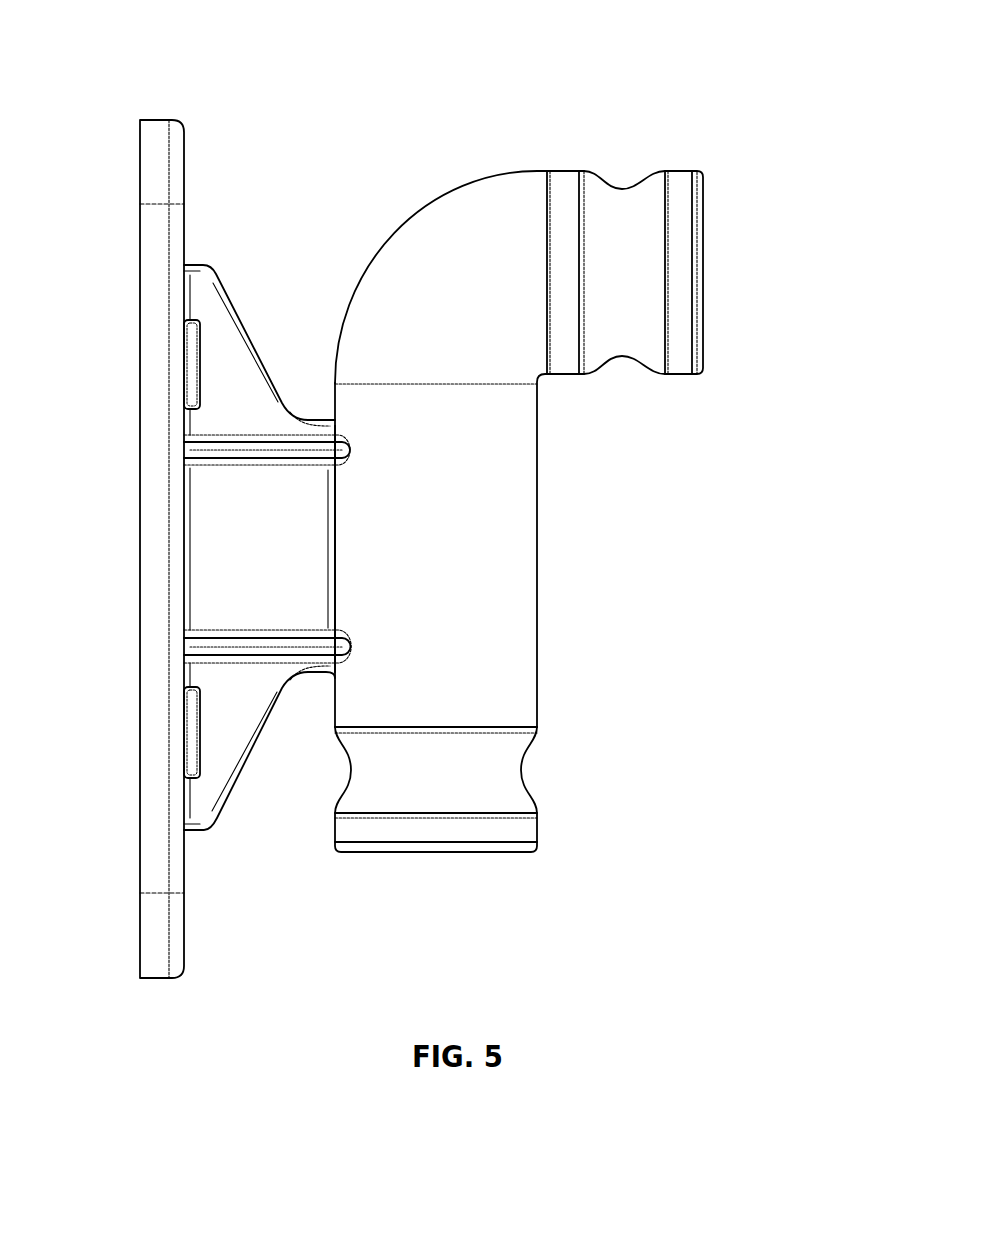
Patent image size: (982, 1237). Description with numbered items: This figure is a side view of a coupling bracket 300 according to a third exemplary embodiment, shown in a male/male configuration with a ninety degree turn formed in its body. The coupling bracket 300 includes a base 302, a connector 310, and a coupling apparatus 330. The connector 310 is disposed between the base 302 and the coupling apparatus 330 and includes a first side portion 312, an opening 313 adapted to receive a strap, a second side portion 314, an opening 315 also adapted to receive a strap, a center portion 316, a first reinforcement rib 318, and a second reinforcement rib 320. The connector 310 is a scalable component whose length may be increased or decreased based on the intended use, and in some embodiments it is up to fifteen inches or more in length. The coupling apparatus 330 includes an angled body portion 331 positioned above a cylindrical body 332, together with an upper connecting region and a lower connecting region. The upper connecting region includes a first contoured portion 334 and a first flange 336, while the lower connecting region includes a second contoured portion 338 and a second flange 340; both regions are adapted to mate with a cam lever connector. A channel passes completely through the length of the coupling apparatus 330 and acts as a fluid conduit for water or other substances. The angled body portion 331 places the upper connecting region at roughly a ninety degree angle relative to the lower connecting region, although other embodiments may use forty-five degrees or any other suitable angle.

The coupling bracket 300 is at (447, 114).
The base 302 is at (182, 122).
The connector 310 is at (212, 862).
The first side portion 312 is at (232, 717).
The opening 313 is at (188, 735).
The second side portion 314 is at (234, 370).
The opening 315 is at (188, 360).
The center portion 316 is at (238, 558).
The first reinforcement rib 318 is at (188, 447).
The second reinforcement rib 320 is at (188, 650).
The coupling apparatus 330 is at (541, 591).
The angled body portion 331 is at (490, 302).
The cylindrical body 332 is at (467, 555).
The first contoured portion 334 is at (623, 188).
The first flange 336 is at (703, 268).
The second contoured portion 338 is at (521, 770).
The second flange 340 is at (447, 853).